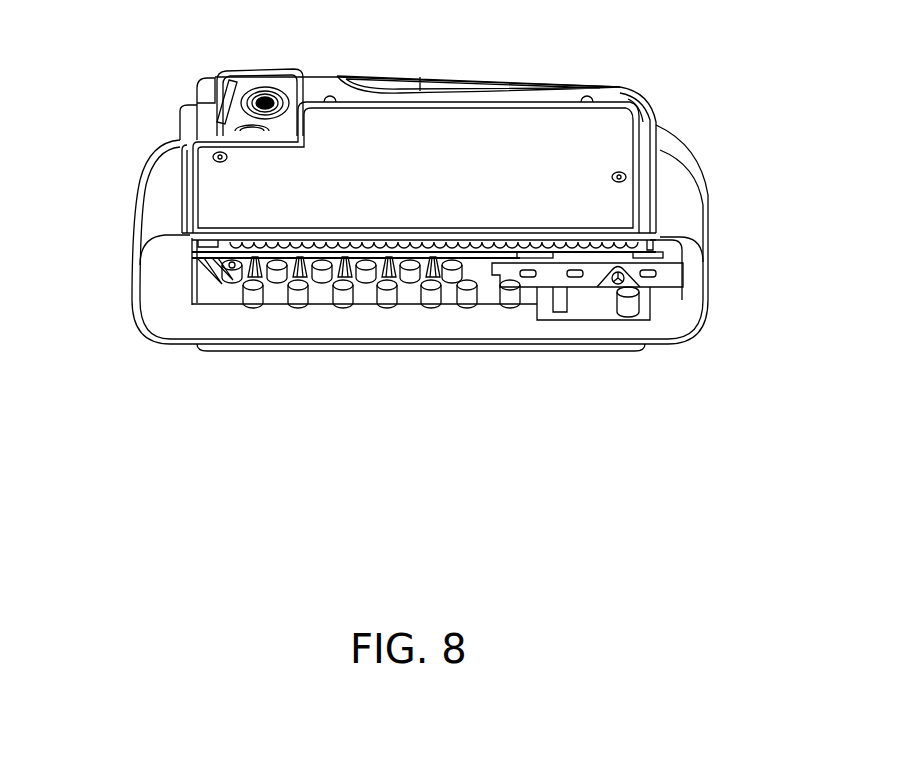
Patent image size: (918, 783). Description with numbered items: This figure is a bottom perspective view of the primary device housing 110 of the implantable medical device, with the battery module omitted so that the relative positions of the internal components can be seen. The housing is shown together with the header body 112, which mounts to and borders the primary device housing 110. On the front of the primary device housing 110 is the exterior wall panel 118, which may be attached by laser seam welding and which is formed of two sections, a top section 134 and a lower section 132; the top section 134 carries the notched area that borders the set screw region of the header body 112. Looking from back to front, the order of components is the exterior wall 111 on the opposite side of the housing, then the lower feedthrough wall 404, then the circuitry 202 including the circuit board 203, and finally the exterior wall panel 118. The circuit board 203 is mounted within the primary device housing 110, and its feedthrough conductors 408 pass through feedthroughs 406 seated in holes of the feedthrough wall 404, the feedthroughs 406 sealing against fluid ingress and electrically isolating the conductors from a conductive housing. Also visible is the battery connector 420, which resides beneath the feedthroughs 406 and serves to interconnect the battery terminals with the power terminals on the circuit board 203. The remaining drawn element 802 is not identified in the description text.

The primary device housing 110 is at (710, 219).
The exterior wall 111 is at (610, 352).
The header body 112 is at (418, 58).
The exterior wall panel 118 is at (614, 157).
The lower section 132 is at (228, 195).
The top section 134 is at (332, 137).
The circuitry 202 is at (196, 292).
The circuit board 203 is at (197, 262).
The lower feedthrough wall 404 is at (317, 300).
The feedthroughs 406 is at (233, 280).
The feedthrough conductors 408 is at (230, 272).
The battery connector 420 is at (670, 322).
The brush contacts 802 is at (405, 305).